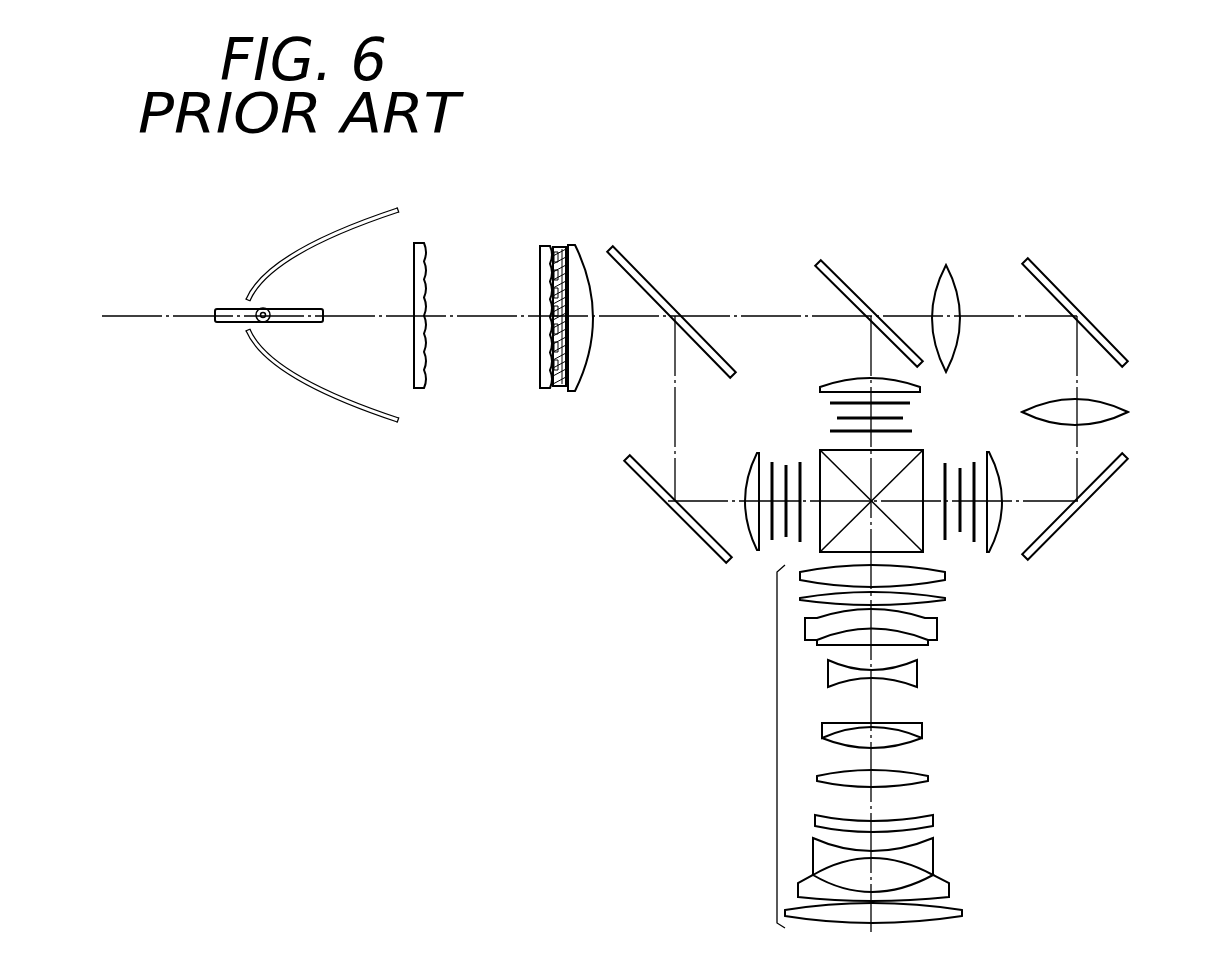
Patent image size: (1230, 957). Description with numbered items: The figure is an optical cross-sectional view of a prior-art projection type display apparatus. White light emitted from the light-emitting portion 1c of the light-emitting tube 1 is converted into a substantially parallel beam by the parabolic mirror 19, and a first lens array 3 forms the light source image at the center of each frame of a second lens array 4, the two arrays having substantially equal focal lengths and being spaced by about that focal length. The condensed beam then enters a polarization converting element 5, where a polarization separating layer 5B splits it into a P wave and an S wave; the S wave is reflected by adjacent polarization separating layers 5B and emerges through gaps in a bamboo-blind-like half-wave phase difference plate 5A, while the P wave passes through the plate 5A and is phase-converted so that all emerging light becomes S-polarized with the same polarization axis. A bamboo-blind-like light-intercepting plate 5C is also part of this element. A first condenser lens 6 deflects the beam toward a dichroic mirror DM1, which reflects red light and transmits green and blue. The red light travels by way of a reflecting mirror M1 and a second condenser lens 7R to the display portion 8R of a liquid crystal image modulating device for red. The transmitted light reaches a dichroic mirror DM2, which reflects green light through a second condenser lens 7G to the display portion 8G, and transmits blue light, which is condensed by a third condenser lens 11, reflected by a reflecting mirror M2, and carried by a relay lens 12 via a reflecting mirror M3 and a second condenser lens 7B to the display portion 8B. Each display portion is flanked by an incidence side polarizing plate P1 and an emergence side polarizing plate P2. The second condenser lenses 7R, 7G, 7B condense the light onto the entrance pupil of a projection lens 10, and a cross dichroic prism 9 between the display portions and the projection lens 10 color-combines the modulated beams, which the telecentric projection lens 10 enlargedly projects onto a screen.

The light-emitting tube 1 is at (264, 305).
The light-emitting portion 1c is at (270, 327).
The parabolic mirror 19 is at (281, 262).
The first lens array 3 is at (420, 243).
The second lens array 4 is at (540, 246).
The polarization converting element 5 is at (561, 247).
The λ/2 phase difference plate 5A is at (568, 246).
The polarization separating layer 5B is at (556, 248).
The light-intercepting plate 5C is at (545, 388).
The first condenser lens 6 is at (585, 260).
The dichroic mirror DM1 is at (655, 287).
The dichroic mirror DM2 is at (851, 290).
The third condenser lens 11 is at (950, 292).
The relay lens 12 is at (1128, 412).
The reflecting mirror M1 is at (672, 507).
The reflecting mirror M2 is at (1058, 292).
The reflecting mirror M3 is at (1100, 490).
The second condenser lens 7R is at (747, 465).
The second condenser lens 7G is at (842, 382).
The second condenser lens 7B is at (1002, 468).
The display portion 8R is at (772, 462).
The display portion 8G is at (900, 418).
The display portion 8B is at (962, 538).
The incidence side polarizing plate P1 is at (907, 403).
The emergence side polarizing plate P2 is at (801, 460).
The cross dichroic prism 9 is at (923, 452).
The projection lens 10 is at (777, 727).